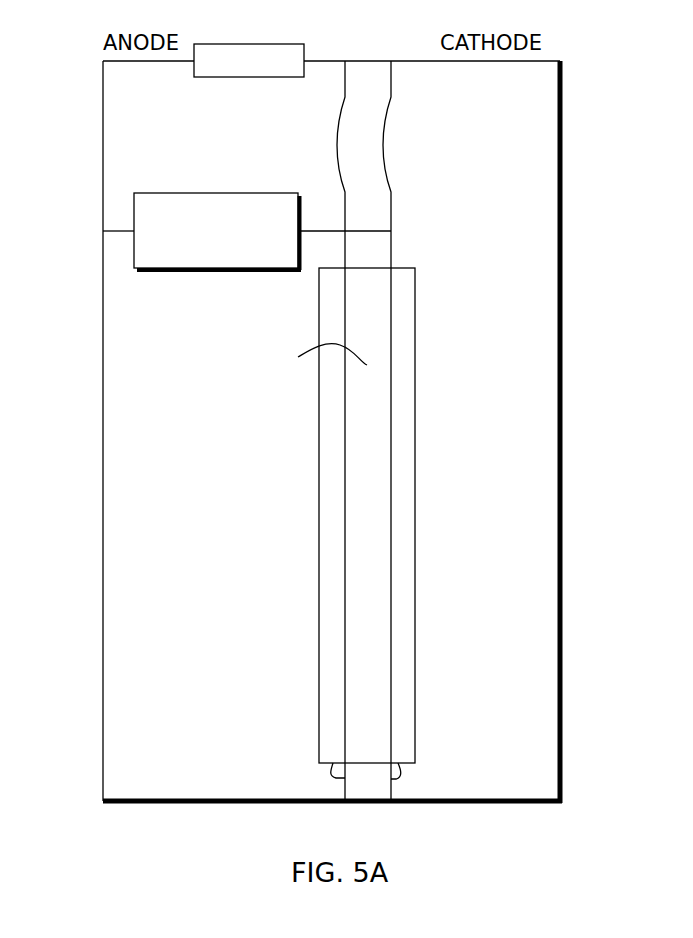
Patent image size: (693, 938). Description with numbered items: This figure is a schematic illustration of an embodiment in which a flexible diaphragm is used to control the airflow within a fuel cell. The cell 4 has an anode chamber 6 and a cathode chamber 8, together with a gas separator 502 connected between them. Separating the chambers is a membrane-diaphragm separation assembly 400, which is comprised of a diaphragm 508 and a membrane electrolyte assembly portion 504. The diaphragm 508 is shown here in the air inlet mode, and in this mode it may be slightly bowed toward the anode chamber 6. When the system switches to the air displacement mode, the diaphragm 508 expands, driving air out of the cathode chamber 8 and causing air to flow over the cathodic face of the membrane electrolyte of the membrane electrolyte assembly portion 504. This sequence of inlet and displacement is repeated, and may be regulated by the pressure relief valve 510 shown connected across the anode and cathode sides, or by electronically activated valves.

The cell 4 is at (590, 398).
The anode chamber 6 is at (102, 637).
The cathode chamber 8 is at (563, 571).
The membrane-diaphragm separation assembly 400 is at (437, 330).
The gas separator 502 is at (185, 275).
The membrane electrolyte assembly portion 504 is at (400, 770).
The diaphragm 508 is at (385, 143).
The pressure relief valve 510 is at (233, 44).